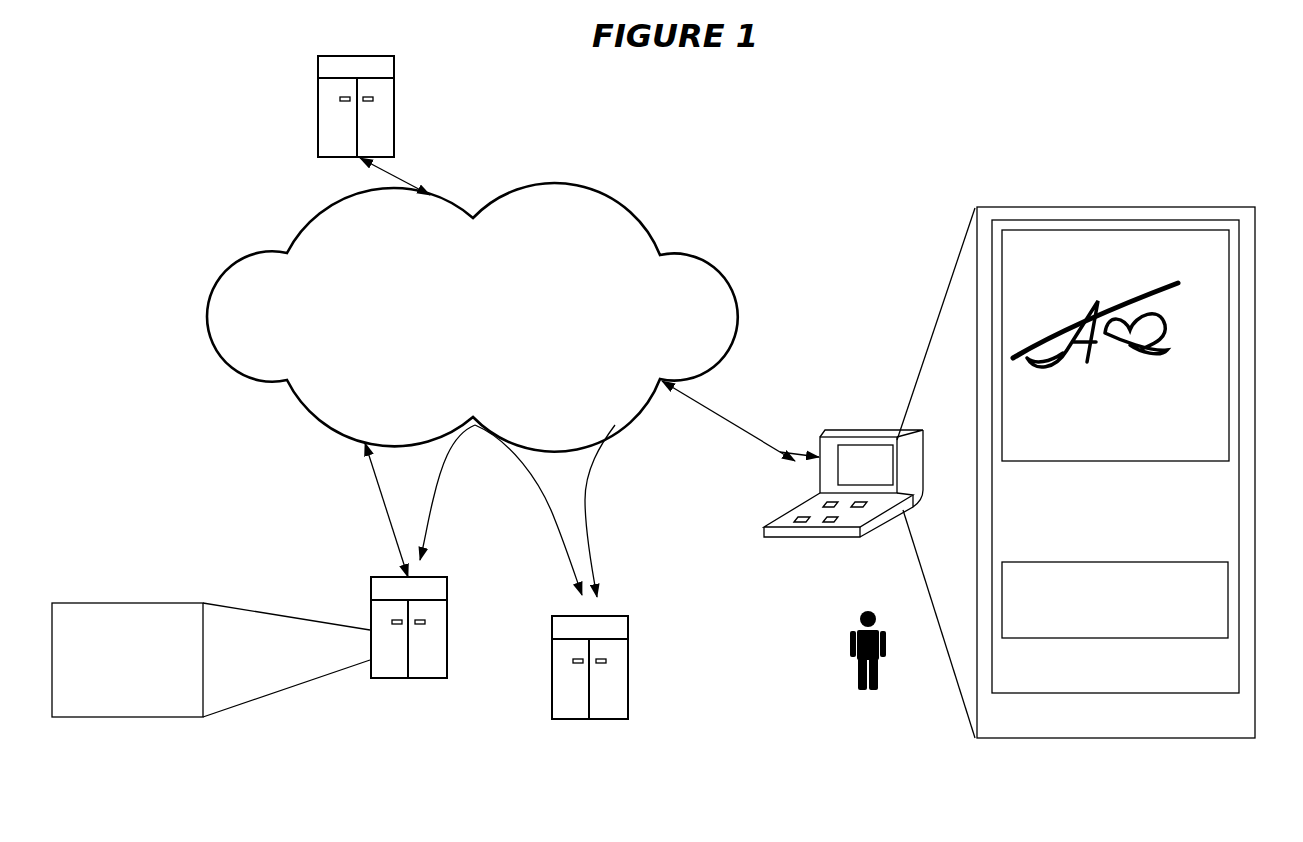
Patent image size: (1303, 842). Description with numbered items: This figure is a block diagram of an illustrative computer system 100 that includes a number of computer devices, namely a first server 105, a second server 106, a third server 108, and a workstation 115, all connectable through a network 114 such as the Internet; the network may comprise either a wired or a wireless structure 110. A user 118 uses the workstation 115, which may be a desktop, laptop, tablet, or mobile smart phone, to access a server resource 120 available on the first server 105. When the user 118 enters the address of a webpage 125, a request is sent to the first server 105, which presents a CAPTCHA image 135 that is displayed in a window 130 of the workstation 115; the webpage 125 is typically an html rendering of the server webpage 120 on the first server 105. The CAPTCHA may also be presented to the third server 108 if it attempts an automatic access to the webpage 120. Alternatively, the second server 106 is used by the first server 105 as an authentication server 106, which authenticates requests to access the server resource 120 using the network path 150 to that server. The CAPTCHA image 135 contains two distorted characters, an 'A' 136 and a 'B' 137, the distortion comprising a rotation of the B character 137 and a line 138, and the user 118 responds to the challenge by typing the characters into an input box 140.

The system 100 is at (377, 172).
The server 105 is at (393, 678).
The server 106 is at (629, 708).
The server 108 is at (394, 108).
The communication link 110 is at (377, 473).
The network 114 is at (215, 288).
The client computing device 115 is at (798, 538).
The user 118 is at (855, 663).
The database 120 is at (117, 717).
The display 125 is at (1240, 485).
The client device (enlarged view) 130 is at (1002, 738).
The handwriting input area 135 is at (1052, 461).
The handwritten stroke 136 is at (1075, 365).
The handwritten stroke 137 is at (1152, 360).
The strikethrough stroke 138 is at (1160, 290).
The recognized text area 140 is at (1077, 563).
The data path 150 is at (527, 480).